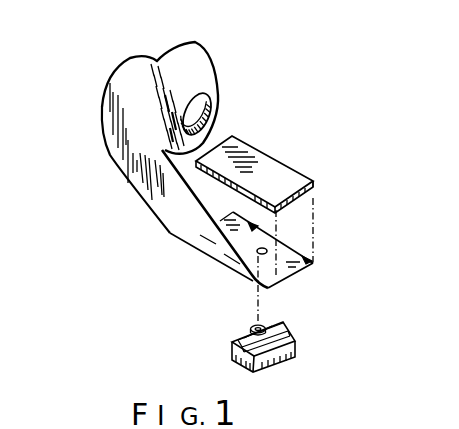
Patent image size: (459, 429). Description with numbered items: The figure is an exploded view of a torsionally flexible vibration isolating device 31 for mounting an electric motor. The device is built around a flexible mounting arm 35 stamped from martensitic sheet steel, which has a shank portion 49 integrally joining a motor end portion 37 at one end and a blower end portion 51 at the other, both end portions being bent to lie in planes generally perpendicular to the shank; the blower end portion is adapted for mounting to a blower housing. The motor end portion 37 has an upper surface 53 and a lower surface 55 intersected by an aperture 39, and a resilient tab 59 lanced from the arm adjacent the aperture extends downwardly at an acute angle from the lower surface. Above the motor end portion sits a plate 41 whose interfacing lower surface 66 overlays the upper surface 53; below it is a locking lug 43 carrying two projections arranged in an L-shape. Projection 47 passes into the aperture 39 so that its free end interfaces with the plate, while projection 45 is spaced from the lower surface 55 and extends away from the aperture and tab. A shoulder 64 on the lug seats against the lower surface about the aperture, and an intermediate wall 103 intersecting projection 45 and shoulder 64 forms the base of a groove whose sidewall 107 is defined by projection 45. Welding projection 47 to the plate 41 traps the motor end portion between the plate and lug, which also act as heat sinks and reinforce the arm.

The torsionally flexible vibration isolating device 31 is at (122, 268).
The flexible mounting arm 35 is at (104, 123).
The motor end portion 37 is at (291, 280).
The aperture 39 is at (268, 250).
The plate 41 is at (246, 143).
The locking lug 43 is at (233, 361).
The projection 45 is at (296, 353).
The projection 47 is at (255, 324).
The shank portion 49 is at (124, 171).
The blower end portion 51 is at (200, 57).
The upper surface 53 is at (314, 245).
The lower surface 55 is at (310, 267).
The tab 59 is at (256, 228).
The shoulder 64 is at (242, 335).
The lower surface 66 is at (303, 197).
The intermediate wall 103 is at (284, 328).
The sidewall 107 is at (262, 358).